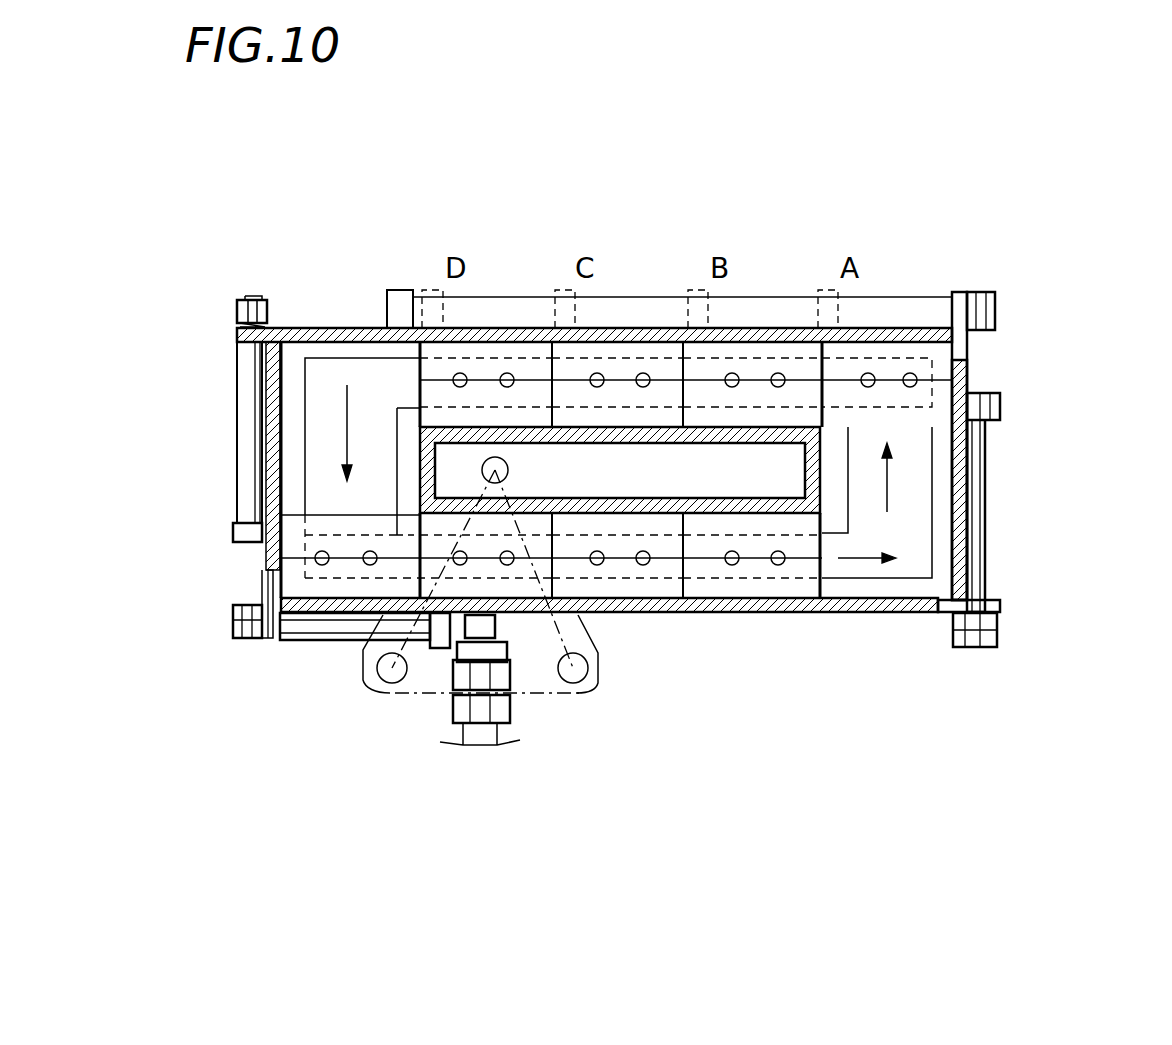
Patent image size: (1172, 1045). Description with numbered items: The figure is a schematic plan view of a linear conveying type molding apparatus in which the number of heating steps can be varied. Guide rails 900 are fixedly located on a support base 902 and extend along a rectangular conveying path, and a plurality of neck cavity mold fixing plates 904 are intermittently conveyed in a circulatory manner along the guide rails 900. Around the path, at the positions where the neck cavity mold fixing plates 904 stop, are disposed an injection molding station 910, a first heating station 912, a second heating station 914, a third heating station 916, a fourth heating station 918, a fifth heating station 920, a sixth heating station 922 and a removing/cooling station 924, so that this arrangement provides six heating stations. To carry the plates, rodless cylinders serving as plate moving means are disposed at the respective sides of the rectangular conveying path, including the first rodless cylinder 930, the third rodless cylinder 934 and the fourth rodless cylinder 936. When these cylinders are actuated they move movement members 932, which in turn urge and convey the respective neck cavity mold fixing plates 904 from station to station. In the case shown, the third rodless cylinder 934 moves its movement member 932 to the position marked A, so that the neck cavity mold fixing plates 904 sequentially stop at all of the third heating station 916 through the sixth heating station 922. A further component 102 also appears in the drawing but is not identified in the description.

The fluid fitting 102 is at (487, 735).
The guide rails 900 is at (835, 502).
The support base 902 is at (972, 365).
The neck cavity mold fixing plates 904 is at (710, 592).
The injection molding station 910 is at (457, 596).
The first heating station 912 is at (652, 597).
The second heating station 914 is at (778, 598).
The third heating station 916 is at (886, 367).
The fourth heating station 918 is at (736, 346).
The fifth heating station 920 is at (592, 351).
The sixth heating station 922 is at (447, 368).
The removing/cooling station 924 is at (309, 528).
The first rodless cylinder 930 is at (300, 650).
The movement member 932 is at (237, 333).
The third rodless cylinder 934 is at (643, 305).
The fourth rodless cylinder 936 is at (253, 423).